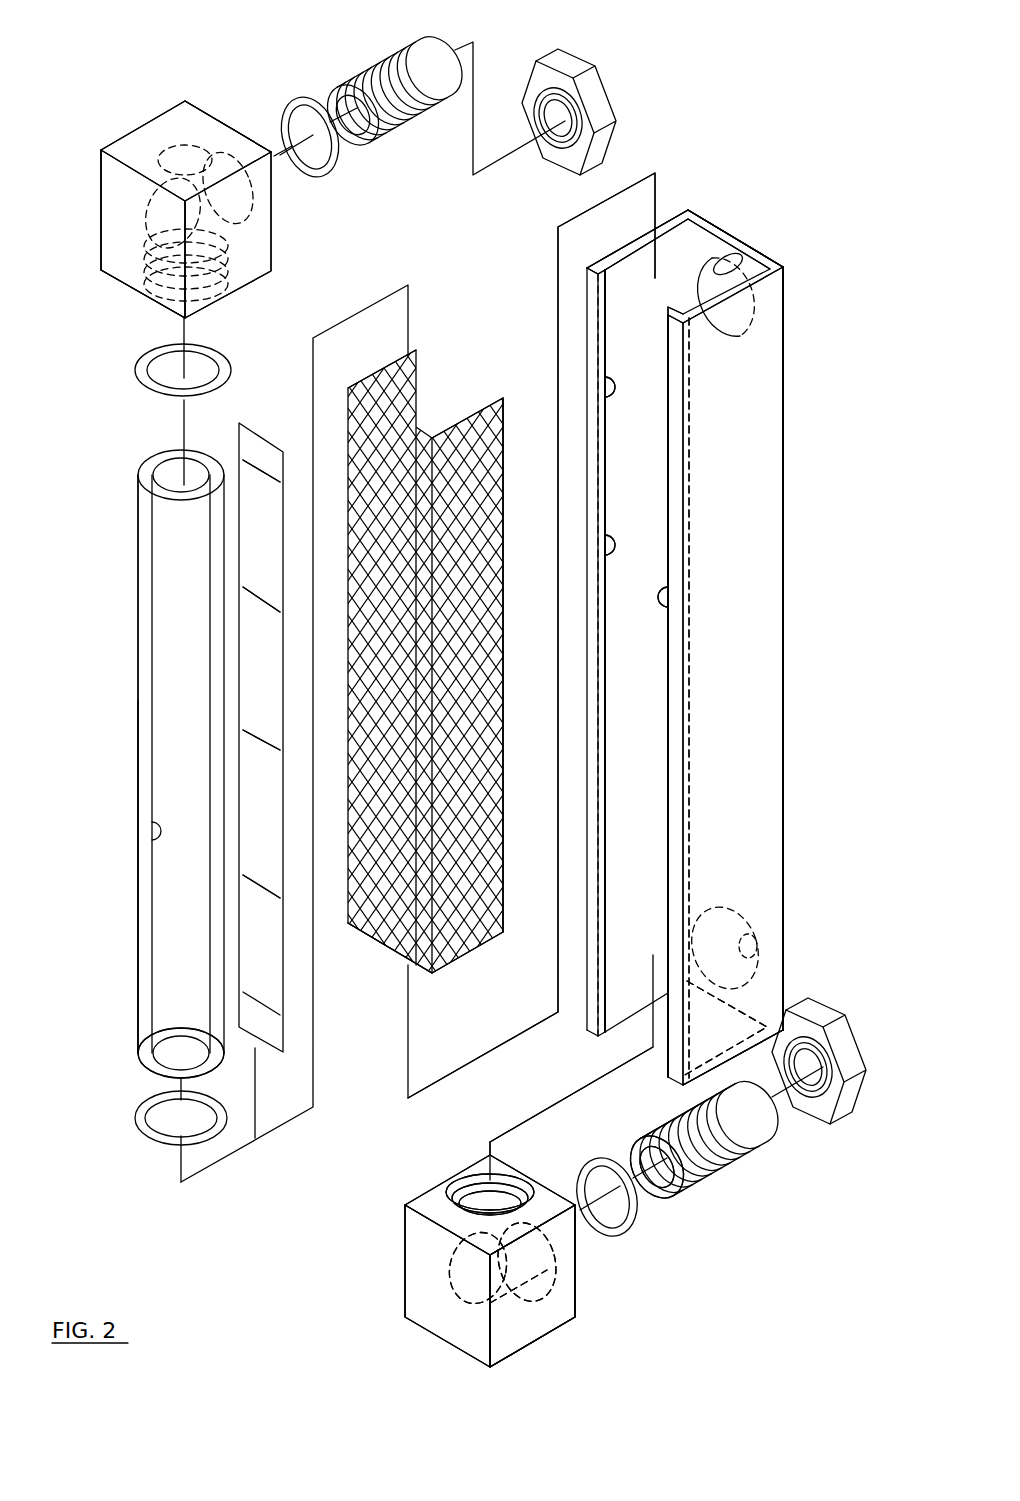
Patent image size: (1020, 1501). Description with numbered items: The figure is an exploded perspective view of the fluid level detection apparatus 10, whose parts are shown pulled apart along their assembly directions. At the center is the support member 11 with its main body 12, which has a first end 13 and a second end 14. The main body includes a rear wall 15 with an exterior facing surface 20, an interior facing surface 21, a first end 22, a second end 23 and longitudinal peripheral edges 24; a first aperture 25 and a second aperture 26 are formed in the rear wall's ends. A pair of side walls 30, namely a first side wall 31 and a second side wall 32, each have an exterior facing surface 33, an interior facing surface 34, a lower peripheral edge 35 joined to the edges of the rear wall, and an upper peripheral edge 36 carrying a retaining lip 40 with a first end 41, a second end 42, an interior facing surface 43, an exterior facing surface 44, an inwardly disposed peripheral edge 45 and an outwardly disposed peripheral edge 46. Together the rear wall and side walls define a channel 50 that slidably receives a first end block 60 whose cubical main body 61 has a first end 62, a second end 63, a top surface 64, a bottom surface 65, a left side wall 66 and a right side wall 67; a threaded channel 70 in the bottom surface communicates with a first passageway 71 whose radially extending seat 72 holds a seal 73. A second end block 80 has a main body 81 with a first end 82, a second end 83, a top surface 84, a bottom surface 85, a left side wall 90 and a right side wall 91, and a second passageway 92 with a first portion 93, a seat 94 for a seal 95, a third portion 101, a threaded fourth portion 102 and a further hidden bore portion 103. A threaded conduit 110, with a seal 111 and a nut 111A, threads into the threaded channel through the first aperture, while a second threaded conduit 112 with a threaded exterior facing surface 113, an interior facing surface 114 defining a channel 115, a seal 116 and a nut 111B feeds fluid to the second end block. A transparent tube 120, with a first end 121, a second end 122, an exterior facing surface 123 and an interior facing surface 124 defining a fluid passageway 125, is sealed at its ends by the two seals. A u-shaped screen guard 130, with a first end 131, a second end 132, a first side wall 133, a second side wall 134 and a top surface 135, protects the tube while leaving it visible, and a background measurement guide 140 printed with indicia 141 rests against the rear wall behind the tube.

The fluid level detection apparatus 10 is at (710, 165).
The support member 11 is at (800, 596).
The main body 12 is at (772, 554).
The first end 13 is at (783, 310).
The second end 14 is at (765, 992).
The rear wall 15 is at (770, 507).
The exterior facing surface 20 is at (783, 627).
The interior facing surface 21 is at (702, 237).
The first end 22 is at (768, 258).
The second end 23 is at (737, 1023).
The peripheral edges 24 is at (688, 212).
The first aperture 25 is at (728, 252).
The second aperture 26 is at (757, 942).
The pair of side walls 30 is at (582, 298).
The first side wall 31 is at (630, 335).
The second side wall 32 is at (718, 445).
The exterior facing surface 33 is at (610, 250).
The interior facing surface 34 is at (623, 475).
The lower peripheral edge 35 is at (692, 257).
The upper peripheral edge 36 is at (600, 336).
The retaining lip 40 is at (590, 465).
The first end 41 is at (587, 270).
The second end 42 is at (590, 1030).
The interior facing surface 43 is at (600, 385).
The exterior facing surface 44 is at (590, 500).
The inwardly disposed peripheral edge 45 is at (598, 538).
The outwardly disposed peripheral edge 46 is at (590, 584).
The channel 50 is at (588, 968).
The first end block 60 is at (145, 110).
The main body 61 is at (202, 140).
The first end 62 is at (177, 138).
The second end 63 is at (100, 272).
The top surface 64 is at (122, 203).
The bottom surface 65 is at (230, 122).
The left side wall 66 is at (100, 171).
The right side wall 67 is at (255, 245).
The threaded channel 70 is at (262, 222).
The first passageway 71 is at (222, 303).
The radially extending seat 72 is at (135, 290).
The seal 73 is at (140, 380).
The second end block 80 is at (380, 1251).
The main body 81 is at (530, 1310).
The first end 82 is at (448, 1185).
The second end 83 is at (525, 1350).
The top surface 84 is at (405, 1220).
The bottom surface 85 is at (575, 1270).
The left side wall 90 is at (412, 1197).
The right side wall 91 is at (565, 1296).
The second passageway 92 is at (468, 1158).
The first portion 93 is at (505, 1183).
The radially extending seat 94 is at (512, 1198).
The seal 95 is at (135, 1125).
The third portion 101 is at (470, 1280).
The fourth portion 102 is at (545, 1247).
The cross bore 103 is at (465, 1212).
The threaded conduit 110 is at (392, 68).
The seal 111 is at (284, 105).
The nut 111A is at (580, 78).
The lower hex nut 111B is at (845, 1125).
The threaded conduit 112 is at (736, 1162).
The threaded exterior facing surface 113 is at (760, 1150).
The interior facing surface 114 is at (664, 1195).
The channel 115 is at (688, 1190).
The lower nipple washer 116 is at (610, 1160).
The transparent tube 120 is at (128, 768).
The first end 121 is at (140, 496).
The second end 122 is at (150, 1010).
The exterior facing surface 123 is at (138, 863).
The interior facing surface 124 is at (152, 822).
The fluid passageway 125 is at (185, 898).
The u-shaped member 130 is at (370, 962).
The first end 131 is at (432, 388).
The second end 132 is at (420, 975).
The first side wall 133 is at (395, 385).
The second side wall 134 is at (503, 853).
The top surface 135 is at (398, 960).
The background measurement guide 140 is at (300, 1028).
The indicia 141 is at (262, 862).